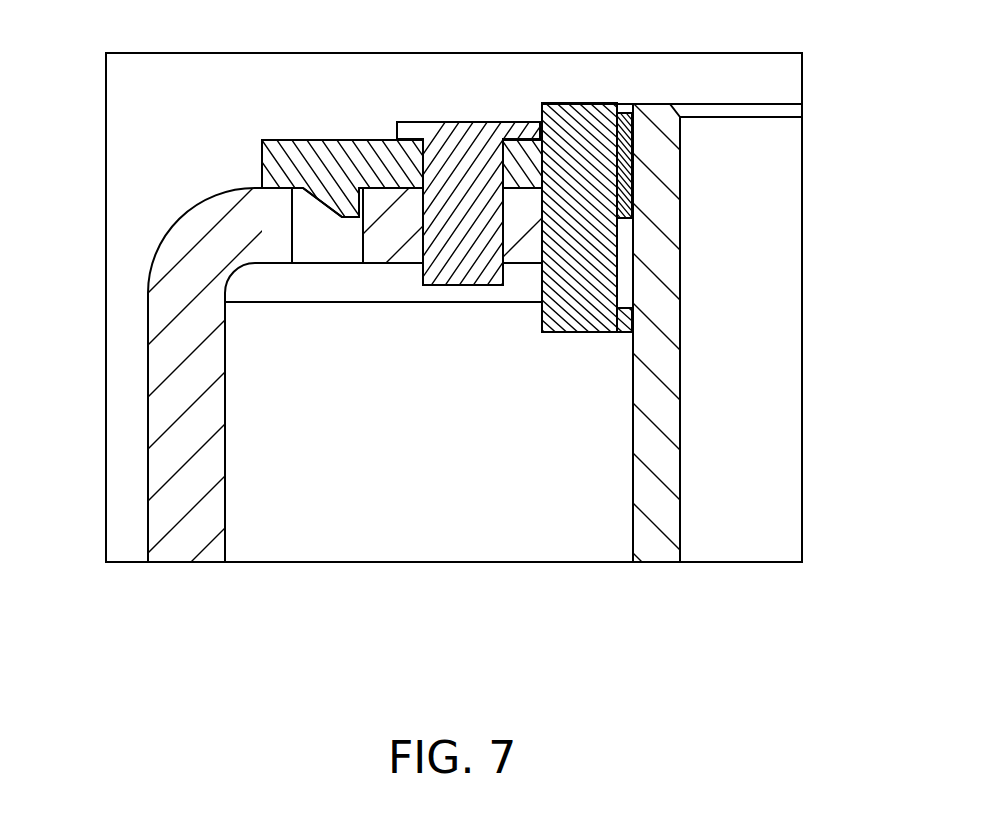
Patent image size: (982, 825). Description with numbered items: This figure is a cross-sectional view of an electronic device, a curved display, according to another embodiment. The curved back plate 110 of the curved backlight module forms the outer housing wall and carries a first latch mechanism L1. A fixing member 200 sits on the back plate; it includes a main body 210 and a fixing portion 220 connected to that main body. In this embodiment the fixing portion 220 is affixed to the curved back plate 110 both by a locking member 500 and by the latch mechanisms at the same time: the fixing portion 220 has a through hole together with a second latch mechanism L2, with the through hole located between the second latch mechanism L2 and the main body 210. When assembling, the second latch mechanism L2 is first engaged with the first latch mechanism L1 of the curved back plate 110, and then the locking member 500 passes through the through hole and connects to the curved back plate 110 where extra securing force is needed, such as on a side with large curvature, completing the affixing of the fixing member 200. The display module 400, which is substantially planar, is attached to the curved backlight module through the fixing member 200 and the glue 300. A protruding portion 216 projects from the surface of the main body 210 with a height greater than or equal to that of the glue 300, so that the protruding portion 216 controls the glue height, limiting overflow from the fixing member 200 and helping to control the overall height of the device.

The curved back plate 110 is at (173, 457).
The fixing member 200 is at (285, 140).
The fixing portion 220 is at (388, 163).
The locking member 500 is at (470, 137).
The main body 210 is at (592, 262).
The protruding portion 216 is at (628, 318).
The glue 300 is at (630, 192).
The display module 400 is at (662, 154).
The first latch mechanism L1 is at (322, 247).
The second latch mechanism L2 is at (342, 197).